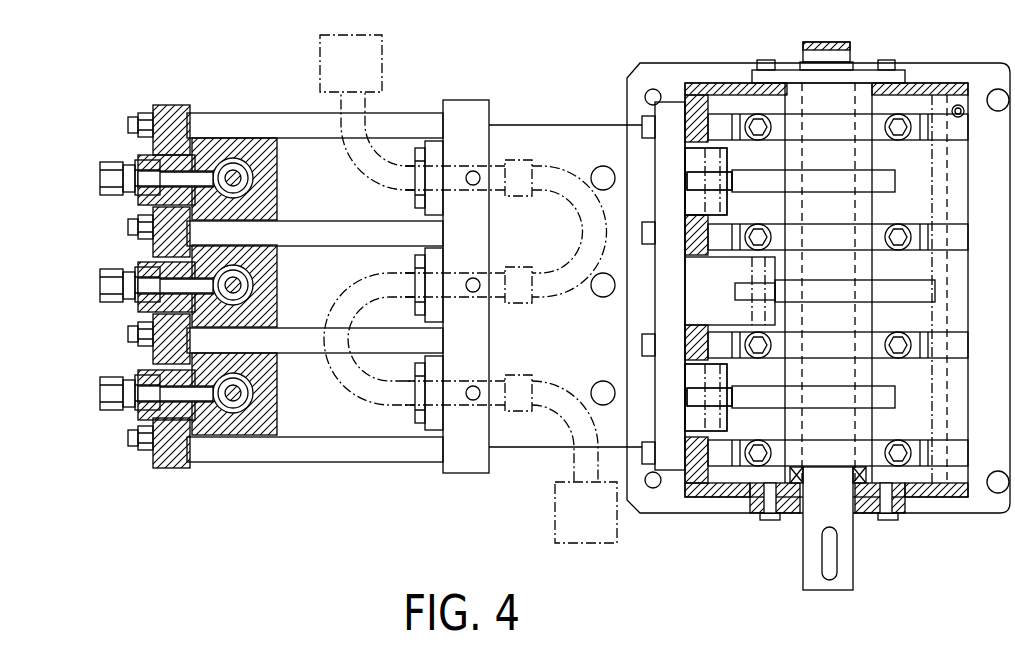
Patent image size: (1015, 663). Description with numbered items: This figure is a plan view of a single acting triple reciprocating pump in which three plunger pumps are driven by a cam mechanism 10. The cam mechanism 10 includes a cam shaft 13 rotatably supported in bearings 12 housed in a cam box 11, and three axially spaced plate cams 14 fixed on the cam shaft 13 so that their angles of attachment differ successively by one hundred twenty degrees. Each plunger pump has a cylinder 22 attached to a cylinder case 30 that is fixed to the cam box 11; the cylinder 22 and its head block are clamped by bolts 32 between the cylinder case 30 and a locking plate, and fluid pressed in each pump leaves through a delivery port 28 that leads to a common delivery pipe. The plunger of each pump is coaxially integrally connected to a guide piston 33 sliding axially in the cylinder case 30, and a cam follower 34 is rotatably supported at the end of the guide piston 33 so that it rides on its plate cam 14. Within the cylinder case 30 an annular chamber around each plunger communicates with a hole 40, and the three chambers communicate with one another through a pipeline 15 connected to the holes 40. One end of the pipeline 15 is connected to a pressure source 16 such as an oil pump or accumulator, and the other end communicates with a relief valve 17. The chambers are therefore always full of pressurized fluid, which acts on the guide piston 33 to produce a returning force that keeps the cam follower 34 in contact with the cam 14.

The cam mechanism 10 is at (918, 60).
The cam box 11 is at (940, 83).
The bearings 12 is at (770, 117).
The cam shaft 13 is at (850, 552).
The plate cams 14 is at (888, 186).
The pipeline 15 is at (552, 293).
The pressure source 16 is at (382, 47).
The relief valve 17 is at (555, 528).
The cylinder 22 is at (300, 146).
The delivery port 28 is at (175, 178).
The cylinder case 30 is at (580, 127).
The bolts 32 is at (262, 113).
The guide piston 33 is at (725, 170).
The cam follower 34 is at (727, 185).
The hole 40 is at (475, 171).